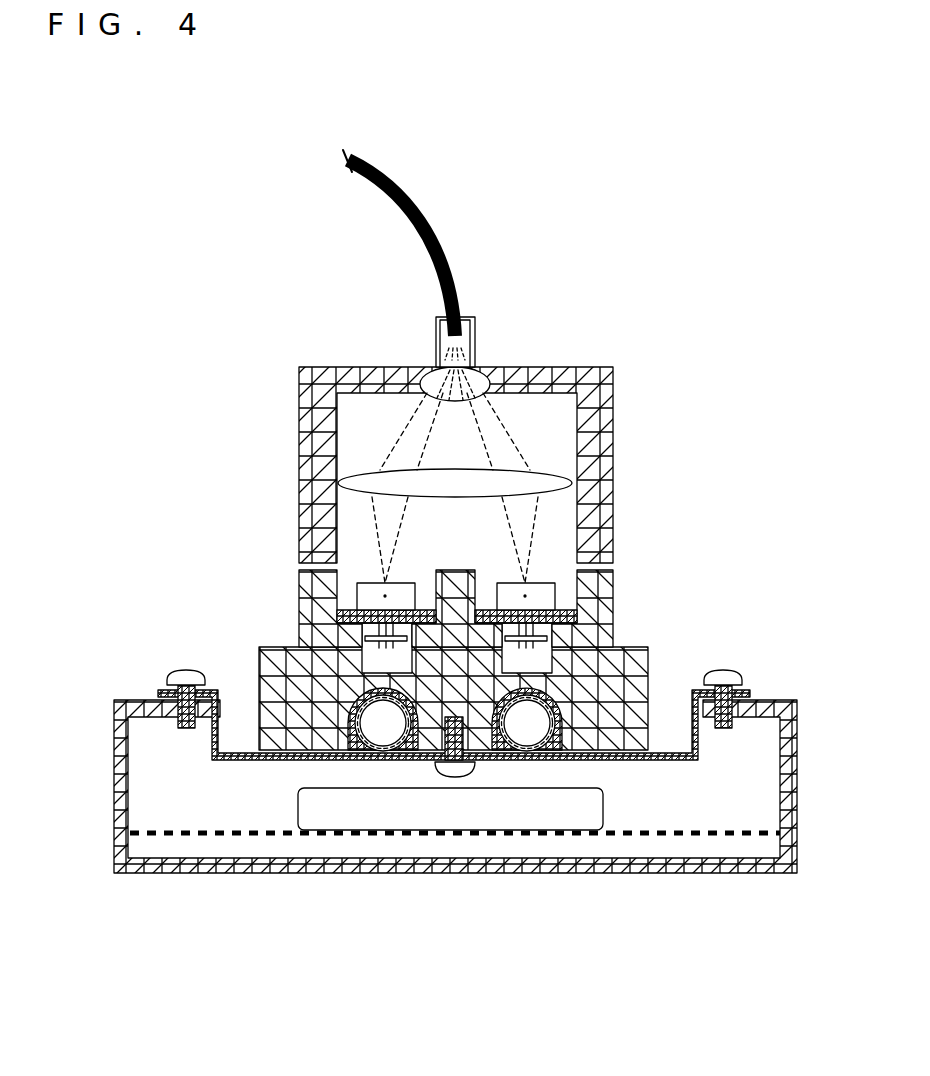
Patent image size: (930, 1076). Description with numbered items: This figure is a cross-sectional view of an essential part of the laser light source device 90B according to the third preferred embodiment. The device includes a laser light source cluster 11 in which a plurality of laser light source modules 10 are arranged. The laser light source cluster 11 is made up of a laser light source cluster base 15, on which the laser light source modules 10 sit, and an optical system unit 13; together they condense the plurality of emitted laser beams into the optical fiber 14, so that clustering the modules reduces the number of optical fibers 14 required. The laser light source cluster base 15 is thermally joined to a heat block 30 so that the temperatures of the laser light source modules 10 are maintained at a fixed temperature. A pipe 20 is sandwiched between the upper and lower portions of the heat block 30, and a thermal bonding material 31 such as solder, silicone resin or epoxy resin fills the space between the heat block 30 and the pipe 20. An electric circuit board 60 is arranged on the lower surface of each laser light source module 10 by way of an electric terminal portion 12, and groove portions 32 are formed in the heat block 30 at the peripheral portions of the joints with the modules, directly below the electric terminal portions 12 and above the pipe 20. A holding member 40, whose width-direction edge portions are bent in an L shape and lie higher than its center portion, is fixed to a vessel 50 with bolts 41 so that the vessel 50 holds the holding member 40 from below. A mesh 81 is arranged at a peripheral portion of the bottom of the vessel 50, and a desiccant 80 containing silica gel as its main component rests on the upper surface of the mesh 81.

The laser light source device 90B is at (115, 118).
The optical fiber 14 is at (437, 227).
The optical system unit 13 is at (299, 468).
The laser light source cluster 11 is at (395, 507).
The laser light source cluster base 15 is at (420, 608).
The laser light source module 10 is at (512, 583).
The electric terminal portion 12 is at (573, 566).
The electric circuit board 60 is at (540, 638).
The heat block 30 is at (648, 678).
The bolt 41 is at (728, 667).
The holding member 40 is at (212, 747).
The vessel 50 is at (114, 805).
The thermal bonding material 31 is at (348, 703).
The pipe 20 is at (357, 728).
The desiccant 80 is at (415, 818).
The mesh 81 is at (475, 837).
The groove portion 32 is at (400, 665).